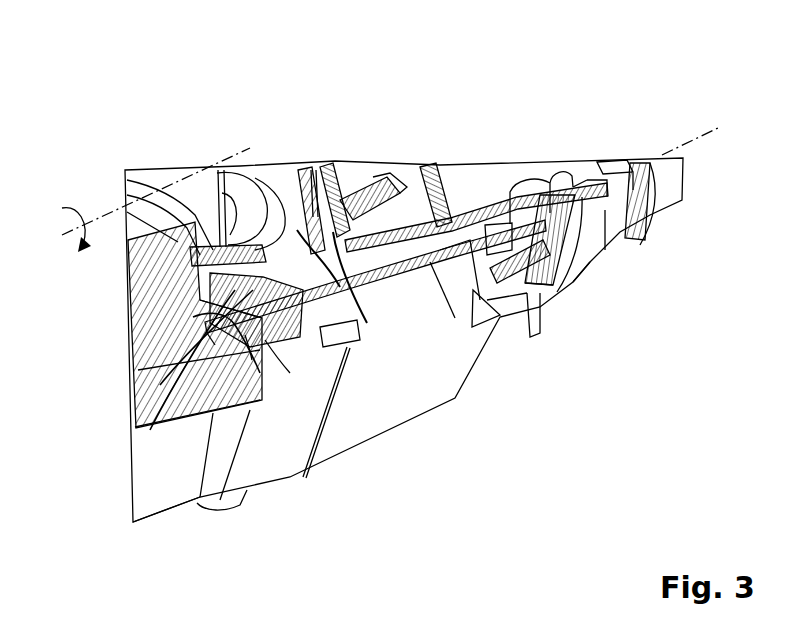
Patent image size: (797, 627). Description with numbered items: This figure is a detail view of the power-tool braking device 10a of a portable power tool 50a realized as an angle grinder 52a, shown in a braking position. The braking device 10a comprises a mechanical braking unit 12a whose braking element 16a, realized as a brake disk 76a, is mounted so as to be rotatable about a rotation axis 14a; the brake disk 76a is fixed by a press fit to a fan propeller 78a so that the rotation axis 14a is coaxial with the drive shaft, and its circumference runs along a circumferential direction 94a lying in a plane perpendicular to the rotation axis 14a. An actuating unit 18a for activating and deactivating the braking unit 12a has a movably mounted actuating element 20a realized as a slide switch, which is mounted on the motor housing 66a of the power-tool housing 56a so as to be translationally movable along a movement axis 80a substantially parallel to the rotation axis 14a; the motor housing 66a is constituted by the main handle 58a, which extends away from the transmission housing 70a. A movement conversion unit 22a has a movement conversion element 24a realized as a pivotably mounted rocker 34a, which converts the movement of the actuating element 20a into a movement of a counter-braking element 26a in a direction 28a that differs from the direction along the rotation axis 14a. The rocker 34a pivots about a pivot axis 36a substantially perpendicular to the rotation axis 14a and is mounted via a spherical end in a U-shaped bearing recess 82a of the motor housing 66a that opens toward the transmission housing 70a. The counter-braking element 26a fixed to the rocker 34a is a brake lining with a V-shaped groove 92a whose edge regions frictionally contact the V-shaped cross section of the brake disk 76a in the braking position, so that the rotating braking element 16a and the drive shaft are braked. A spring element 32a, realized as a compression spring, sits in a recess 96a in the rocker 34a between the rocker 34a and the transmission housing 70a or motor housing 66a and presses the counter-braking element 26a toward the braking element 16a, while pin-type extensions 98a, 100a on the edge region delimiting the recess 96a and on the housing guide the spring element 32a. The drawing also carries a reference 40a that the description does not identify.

The power-tool braking device 10a is at (123, 108).
The mechanical braking unit 12a is at (103, 145).
The rotation axis 14a is at (228, 165).
The braking element 16a is at (377, 250).
The actuating unit 18a is at (675, 240).
The actuating element 20a is at (580, 253).
The movement conversion unit 22a is at (195, 520).
The movement conversion element 24a is at (150, 430).
The counter-braking element 26a is at (378, 250).
The direction 28a is at (410, 535).
The spring element 32a is at (252, 360).
The rocker 34a is at (367, 323).
The pivot axis 36a is at (490, 303).
The locking element 40a is at (500, 195).
The portable power tool 50a is at (593, 90).
The angle grinder 52a is at (617, 105).
The power-tool housing 56a is at (325, 90).
The main handle 58a is at (433, 340).
The motor housing 66a is at (463, 340).
The transmission housing 70a is at (150, 465).
The brake disk 76a is at (252, 175).
The fan propeller 78a is at (345, 240).
The movement axis 80a is at (700, 137).
The bearing recess 82a is at (478, 225).
The V-shaped groove 92a is at (360, 263).
The circumferential direction 94a is at (62, 222).
The recess 96a is at (193, 317).
The pin-type extension 98a is at (160, 385).
The pin-type extension 100a is at (290, 373).